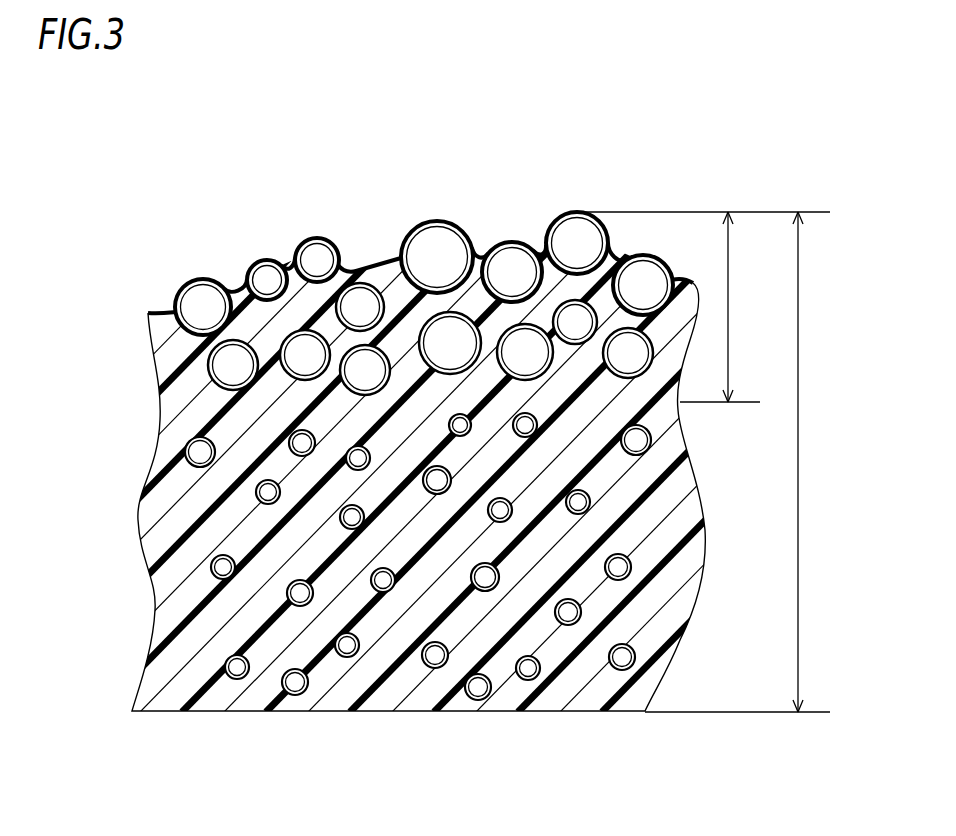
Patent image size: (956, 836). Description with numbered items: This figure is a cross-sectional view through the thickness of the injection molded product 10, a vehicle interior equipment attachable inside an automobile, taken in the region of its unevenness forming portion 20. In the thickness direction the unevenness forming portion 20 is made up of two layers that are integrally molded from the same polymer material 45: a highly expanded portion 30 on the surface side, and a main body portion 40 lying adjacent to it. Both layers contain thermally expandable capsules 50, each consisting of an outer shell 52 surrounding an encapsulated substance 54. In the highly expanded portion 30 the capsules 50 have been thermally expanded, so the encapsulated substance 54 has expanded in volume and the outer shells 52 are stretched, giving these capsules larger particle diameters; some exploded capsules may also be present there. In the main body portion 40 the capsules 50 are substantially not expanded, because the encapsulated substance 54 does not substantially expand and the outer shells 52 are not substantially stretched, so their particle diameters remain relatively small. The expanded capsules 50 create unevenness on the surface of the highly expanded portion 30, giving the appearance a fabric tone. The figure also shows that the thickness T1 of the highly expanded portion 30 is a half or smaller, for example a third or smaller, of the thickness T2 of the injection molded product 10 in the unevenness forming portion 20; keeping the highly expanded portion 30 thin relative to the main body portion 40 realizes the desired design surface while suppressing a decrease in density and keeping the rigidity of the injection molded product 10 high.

The injection molded product 10 is at (703, 166).
The unevenness forming portion 20 is at (278, 232).
The highly expanded portion 30 is at (125, 212).
The main body portion 40 is at (125, 401).
The polymer material 45 is at (248, 320).
The thermally expandable capsules 50 is at (497, 240).
The outer shells 52 is at (481, 252).
The encapsulated substance 54 is at (425, 245).
The thickness of the highly expanded portion T1 is at (703, 307).
The thickness of the injection molded product T2 is at (744, 462).